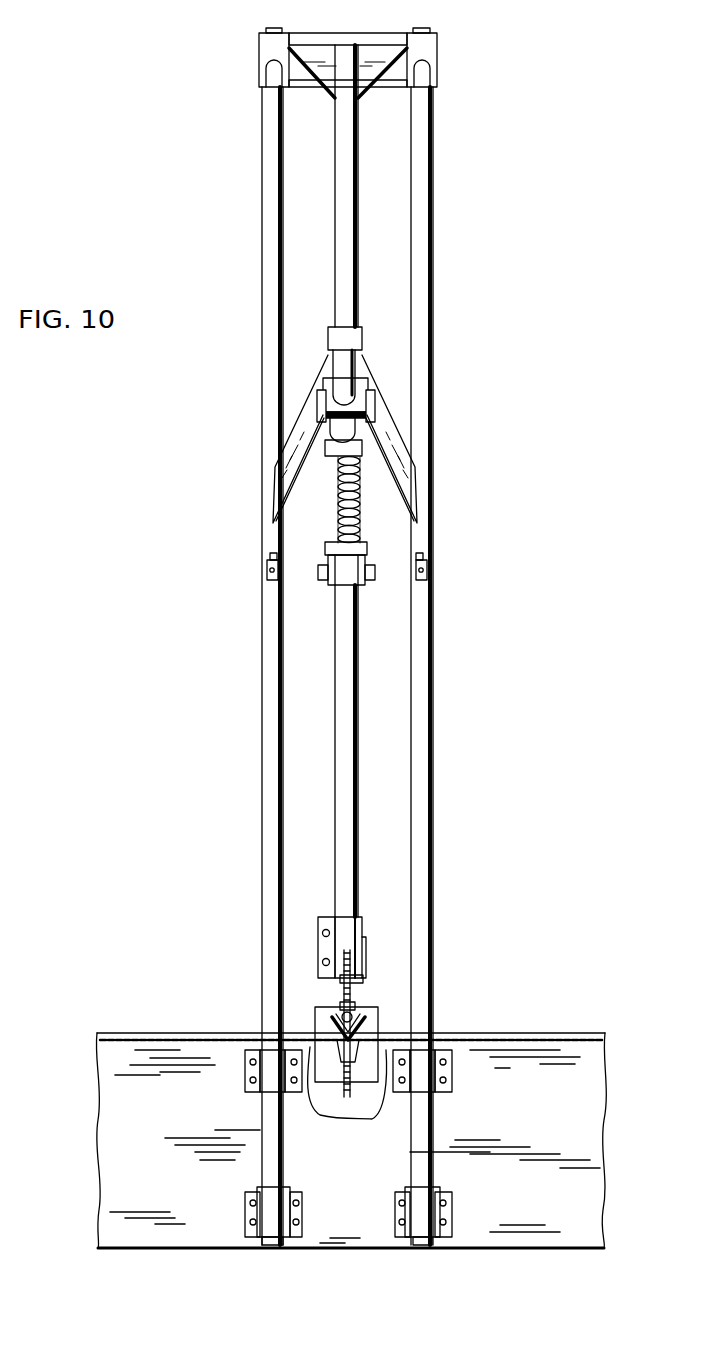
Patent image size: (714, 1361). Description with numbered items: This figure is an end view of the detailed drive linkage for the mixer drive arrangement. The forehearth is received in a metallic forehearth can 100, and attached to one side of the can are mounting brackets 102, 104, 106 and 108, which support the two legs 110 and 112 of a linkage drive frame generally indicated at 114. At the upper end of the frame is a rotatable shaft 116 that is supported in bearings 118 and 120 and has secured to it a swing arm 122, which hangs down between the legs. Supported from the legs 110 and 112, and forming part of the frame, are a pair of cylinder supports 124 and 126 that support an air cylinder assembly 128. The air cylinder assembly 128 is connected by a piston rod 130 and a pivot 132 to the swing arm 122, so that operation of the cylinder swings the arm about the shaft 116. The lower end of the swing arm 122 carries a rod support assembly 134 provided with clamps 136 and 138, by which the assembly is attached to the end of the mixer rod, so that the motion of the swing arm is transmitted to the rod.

The forehearth can 100 is at (115, 1140).
The mounting bracket 102 is at (268, 1070).
The mounting bracket 104 is at (263, 1213).
The mounting bracket 106 is at (452, 1073).
The mounting bracket 108 is at (425, 1218).
The leg 110 is at (272, 760).
The leg 112 is at (425, 768).
The linkage drive frame 114 is at (495, 660).
The rotatable shaft 116 is at (313, 34).
The bearing 118 is at (262, 49).
The bearing 120 is at (437, 52).
The swing arm 122 is at (345, 222).
The cylinder support 124 is at (285, 482).
The cylinder support 126 is at (412, 482).
The air cylinder assembly 128 is at (346, 364).
The piston rod 130 is at (340, 500).
The pivot 132 is at (368, 571).
The rod support assembly 134 is at (365, 960).
The clamp 136 is at (357, 1075).
The clamp 138 is at (342, 996).